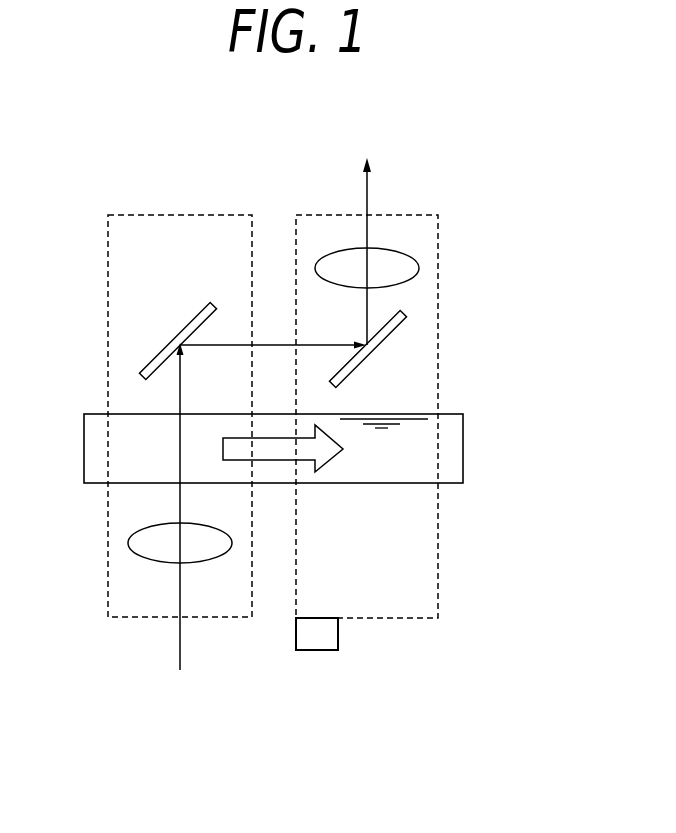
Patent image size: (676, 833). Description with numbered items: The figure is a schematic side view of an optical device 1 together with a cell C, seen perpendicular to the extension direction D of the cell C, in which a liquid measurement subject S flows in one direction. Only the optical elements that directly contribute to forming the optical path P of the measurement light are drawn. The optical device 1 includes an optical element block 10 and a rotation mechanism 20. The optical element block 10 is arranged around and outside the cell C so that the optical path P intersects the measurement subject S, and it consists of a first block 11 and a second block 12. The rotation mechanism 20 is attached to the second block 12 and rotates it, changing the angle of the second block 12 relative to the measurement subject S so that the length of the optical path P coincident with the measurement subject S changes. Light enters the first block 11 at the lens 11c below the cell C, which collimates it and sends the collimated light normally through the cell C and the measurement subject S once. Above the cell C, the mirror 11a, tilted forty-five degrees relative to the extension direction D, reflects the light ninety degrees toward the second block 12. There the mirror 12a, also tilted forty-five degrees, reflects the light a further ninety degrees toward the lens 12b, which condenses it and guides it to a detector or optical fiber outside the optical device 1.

The optical device 1 is at (288, 781).
The optical element block 10 is at (278, 443).
The first block 11 is at (142, 617).
The mirror 11a is at (187, 313).
The lens 11c is at (150, 530).
The second block 12 is at (400, 618).
The mirror 12a is at (405, 309).
The lens 12b is at (413, 253).
The rotation mechanism 20 is at (317, 635).
The cell C is at (463, 443).
The measurement subject S is at (369, 460).
The optical path P is at (367, 192).
The extension direction D is at (538, 508).